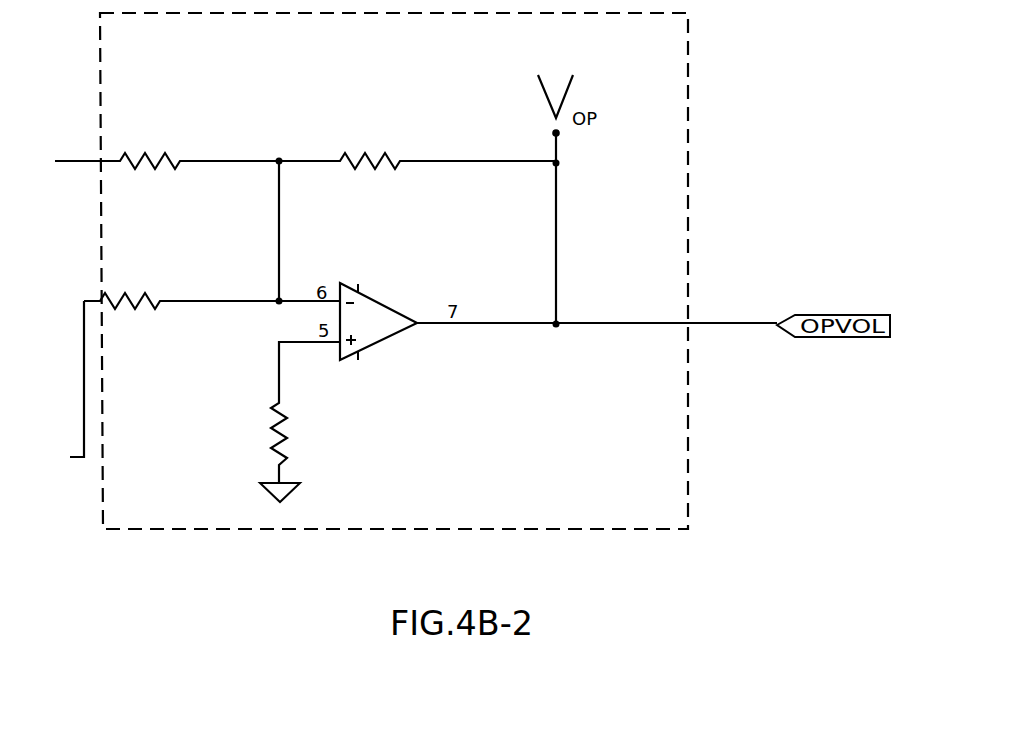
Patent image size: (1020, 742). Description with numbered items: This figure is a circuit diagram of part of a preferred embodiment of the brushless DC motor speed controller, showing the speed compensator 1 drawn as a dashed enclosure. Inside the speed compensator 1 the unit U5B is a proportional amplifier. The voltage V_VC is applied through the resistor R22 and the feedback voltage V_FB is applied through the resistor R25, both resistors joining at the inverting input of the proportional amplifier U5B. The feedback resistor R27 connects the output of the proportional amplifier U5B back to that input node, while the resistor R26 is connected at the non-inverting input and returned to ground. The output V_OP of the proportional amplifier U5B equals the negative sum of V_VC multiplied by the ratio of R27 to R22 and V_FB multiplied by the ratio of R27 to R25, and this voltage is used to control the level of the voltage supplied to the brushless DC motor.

The speed compensator 1 is at (99, 88).
The resistor R22 is at (167, 145).
The feedback resistor R27 is at (417, 145).
The resistor R25 is at (205, 358).
The resistor R26 is at (310, 422).
The proportional amplifier U5B is at (558, 312).